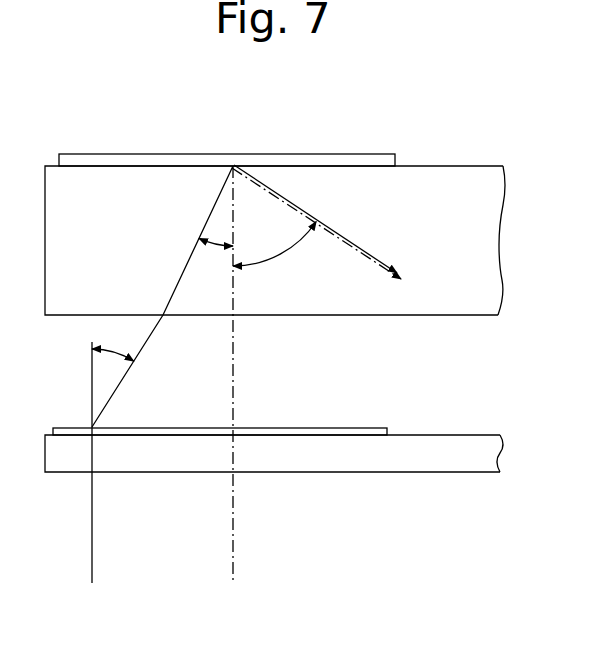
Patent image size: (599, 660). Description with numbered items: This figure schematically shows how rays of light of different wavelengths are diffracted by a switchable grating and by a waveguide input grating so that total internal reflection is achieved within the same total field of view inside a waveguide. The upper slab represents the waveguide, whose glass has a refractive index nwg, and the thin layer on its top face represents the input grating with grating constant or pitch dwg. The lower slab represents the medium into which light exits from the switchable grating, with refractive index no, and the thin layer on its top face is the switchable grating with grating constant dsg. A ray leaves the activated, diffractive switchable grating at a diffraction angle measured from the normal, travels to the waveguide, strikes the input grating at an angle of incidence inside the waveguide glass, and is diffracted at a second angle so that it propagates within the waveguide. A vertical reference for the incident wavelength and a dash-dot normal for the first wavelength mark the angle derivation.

The refractive index of the waveguide nwg is at (455, 187).
The grating constant of the waveguide input grating dwg is at (304, 162).
The refractive index of medium into which light exits from the switchable grating no is at (438, 452).
The grating constant of a switchable grating dsg is at (317, 432).